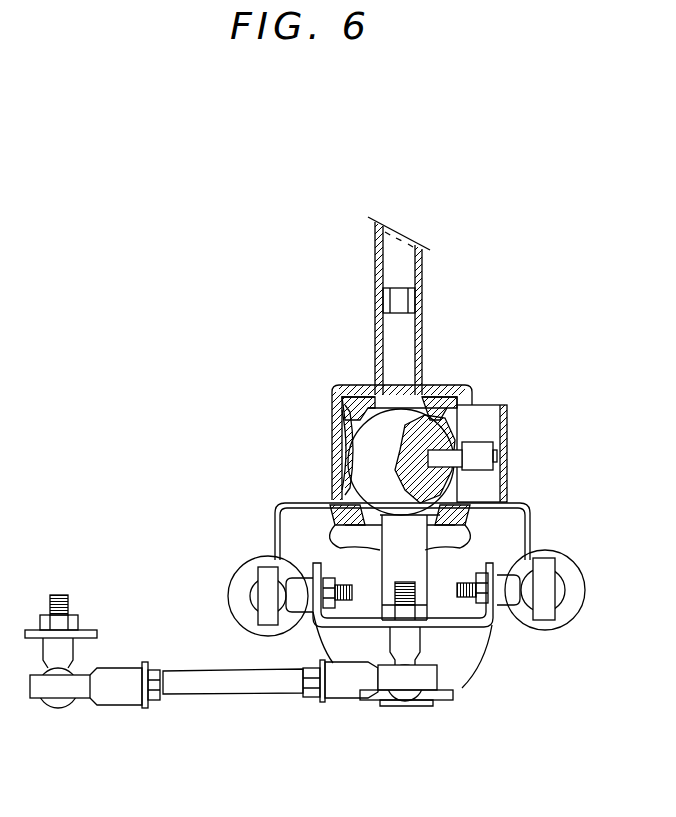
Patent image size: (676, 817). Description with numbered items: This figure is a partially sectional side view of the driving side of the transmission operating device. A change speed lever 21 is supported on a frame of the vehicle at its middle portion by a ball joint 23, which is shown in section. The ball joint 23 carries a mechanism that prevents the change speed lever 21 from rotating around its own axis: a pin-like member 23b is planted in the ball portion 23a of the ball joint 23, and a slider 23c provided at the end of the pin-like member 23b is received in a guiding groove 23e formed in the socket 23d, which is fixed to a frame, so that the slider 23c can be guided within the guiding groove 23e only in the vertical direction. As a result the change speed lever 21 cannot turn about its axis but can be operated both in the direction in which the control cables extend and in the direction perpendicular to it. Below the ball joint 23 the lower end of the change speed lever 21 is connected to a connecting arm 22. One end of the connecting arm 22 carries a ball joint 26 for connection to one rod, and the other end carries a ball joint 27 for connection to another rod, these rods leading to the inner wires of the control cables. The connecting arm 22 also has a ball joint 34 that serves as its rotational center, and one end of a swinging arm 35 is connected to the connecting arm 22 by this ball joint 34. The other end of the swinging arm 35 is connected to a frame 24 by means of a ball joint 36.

The change speed lever 21 is at (377, 263).
The connecting arm 22 is at (472, 655).
The ball joint 23 is at (315, 370).
The ball portion 23a is at (365, 440).
The pin-like member 23b is at (458, 463).
The slider 23c is at (490, 447).
The socket 23d is at (335, 488).
The guiding groove 23e is at (488, 408).
The frame 24 is at (90, 630).
The ball joint 26 is at (245, 576).
The ball joint 27 is at (572, 572).
The ball joint 34 is at (405, 700).
The swinging arm 35 is at (243, 694).
The ball joint 36 is at (57, 699).